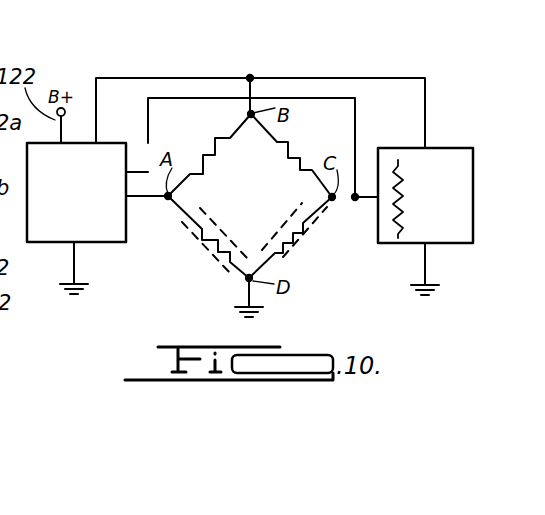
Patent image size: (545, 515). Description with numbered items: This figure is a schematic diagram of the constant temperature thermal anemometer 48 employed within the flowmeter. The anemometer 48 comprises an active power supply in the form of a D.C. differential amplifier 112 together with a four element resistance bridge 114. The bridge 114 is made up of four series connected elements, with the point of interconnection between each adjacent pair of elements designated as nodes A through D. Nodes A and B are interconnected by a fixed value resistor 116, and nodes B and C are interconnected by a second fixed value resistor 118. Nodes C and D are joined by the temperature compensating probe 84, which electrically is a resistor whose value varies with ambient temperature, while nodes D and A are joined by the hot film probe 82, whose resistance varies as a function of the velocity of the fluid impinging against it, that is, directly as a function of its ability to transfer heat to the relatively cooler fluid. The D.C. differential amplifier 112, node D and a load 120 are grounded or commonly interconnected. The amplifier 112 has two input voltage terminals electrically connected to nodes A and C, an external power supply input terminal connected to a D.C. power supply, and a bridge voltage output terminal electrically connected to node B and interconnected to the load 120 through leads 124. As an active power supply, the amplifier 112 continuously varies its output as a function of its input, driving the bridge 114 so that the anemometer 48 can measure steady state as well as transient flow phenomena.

The anemometer 48 is at (281, 68).
The hot film probe 82 is at (206, 207).
The temperature compensating probe 84 is at (310, 235).
The D.C. differential amplifier 112 is at (97, 243).
The four element resistance bridge 114 is at (298, 262).
The fixed value resistor 116 is at (217, 138).
The fixed value resistor 118 is at (288, 142).
The load 120 is at (440, 148).
The leads 124 is at (450, 52).